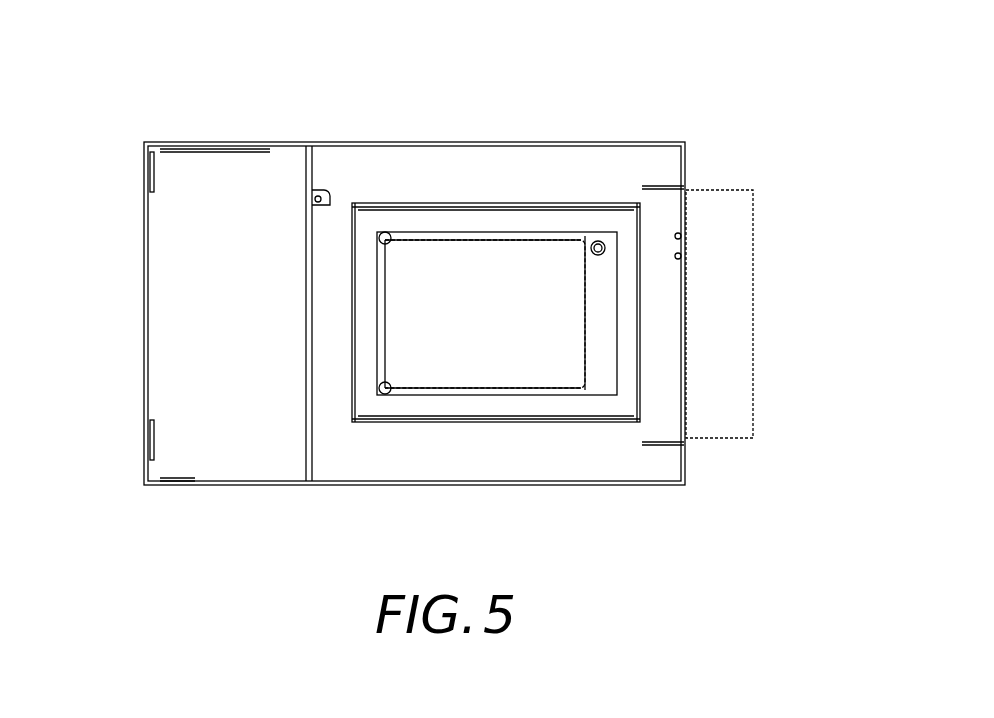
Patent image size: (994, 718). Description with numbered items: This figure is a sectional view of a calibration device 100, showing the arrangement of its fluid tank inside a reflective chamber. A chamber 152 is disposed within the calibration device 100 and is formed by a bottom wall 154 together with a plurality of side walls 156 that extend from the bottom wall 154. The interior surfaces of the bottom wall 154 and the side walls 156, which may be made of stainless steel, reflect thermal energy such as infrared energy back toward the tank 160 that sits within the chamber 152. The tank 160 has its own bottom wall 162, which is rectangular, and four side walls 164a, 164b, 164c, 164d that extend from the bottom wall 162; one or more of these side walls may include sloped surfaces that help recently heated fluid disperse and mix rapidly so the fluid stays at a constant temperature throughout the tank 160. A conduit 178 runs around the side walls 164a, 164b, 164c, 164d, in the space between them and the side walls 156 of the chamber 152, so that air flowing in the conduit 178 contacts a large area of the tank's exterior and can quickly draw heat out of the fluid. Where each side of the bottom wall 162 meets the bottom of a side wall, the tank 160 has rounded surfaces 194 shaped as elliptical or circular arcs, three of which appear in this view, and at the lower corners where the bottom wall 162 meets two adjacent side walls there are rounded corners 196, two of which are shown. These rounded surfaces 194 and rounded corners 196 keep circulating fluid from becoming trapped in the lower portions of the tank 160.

The calibration device 100 is at (763, 87).
The chamber 152 is at (645, 322).
The bottom wall 154 is at (637, 414).
The side walls 156 is at (400, 203).
The tank 160 is at (627, 362).
The bottom wall 162 is at (523, 268).
The side wall 164a is at (377, 248).
The side wall 164b is at (620, 386).
The side wall 164c is at (471, 231).
The side wall 164d is at (464, 397).
The conduit 178 is at (568, 225).
The rounded surfaces 194 is at (448, 236).
The rounded corners 196 is at (384, 232).